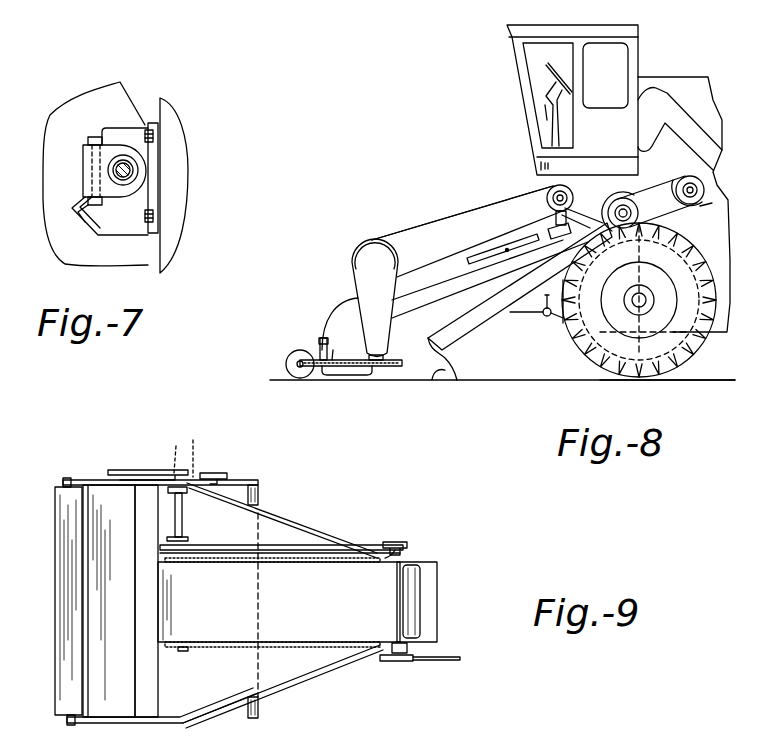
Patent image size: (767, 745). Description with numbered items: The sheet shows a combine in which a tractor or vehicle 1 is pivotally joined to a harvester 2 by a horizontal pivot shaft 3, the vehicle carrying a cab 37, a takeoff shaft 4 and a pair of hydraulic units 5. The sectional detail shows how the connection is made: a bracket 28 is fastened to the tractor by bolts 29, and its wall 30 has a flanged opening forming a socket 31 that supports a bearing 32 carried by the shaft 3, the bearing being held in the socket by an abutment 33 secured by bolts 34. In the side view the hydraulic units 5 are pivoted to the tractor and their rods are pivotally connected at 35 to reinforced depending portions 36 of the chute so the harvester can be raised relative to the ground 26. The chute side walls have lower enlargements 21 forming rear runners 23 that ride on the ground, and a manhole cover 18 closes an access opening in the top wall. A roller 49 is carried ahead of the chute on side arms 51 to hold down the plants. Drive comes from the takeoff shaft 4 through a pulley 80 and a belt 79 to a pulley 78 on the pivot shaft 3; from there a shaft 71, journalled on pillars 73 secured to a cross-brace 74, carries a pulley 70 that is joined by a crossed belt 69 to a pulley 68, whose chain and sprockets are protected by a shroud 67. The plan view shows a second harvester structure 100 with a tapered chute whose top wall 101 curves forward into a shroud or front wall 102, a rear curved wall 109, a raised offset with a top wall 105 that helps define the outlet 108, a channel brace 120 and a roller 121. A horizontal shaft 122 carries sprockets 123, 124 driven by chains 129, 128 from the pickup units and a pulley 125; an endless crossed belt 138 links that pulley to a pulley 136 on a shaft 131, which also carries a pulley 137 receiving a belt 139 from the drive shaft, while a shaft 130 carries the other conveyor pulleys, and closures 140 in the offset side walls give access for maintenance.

In FIG. 8, the tractor or vehicle 1 is at (712, 59).
In FIG. 8, the harvester 2 is at (460, 212).
In FIG. 7, the horizontal pivot shaft 3 is at (122, 162).
In FIG. 8, the horizontal pivot shaft 3 is at (636, 210).
In FIG. 8, the takeoff shaft 4 is at (703, 190).
In FIG. 8, the hydraulic units 5 is at (616, 346).
In FIG. 8, the manhole cover 18 is at (495, 253).
In FIG. 8, the enlargements 21 is at (348, 300).
In FIG. 8, the rear runners 23 is at (433, 375).
In FIG. 8, the ground 26 is at (705, 380).
In FIG. 7, the brackets 28 is at (137, 118).
In FIG. 7, the bolts 29 is at (158, 137).
In FIG. 7, the wall 30 is at (98, 228).
In FIG. 7, the socket 31 is at (85, 185).
In FIG. 7, the bearing 32 is at (140, 173).
In FIG. 7, the abutments 33 is at (85, 168).
In FIG. 7, the bolts 34 is at (95, 137).
In FIG. 8, the bolts 34 is at (636, 316).
In FIG. 8, the pivotal connection 35 is at (547, 318).
In FIG. 8, the depending portions 36 is at (508, 315).
In FIG. 8, the cab 37 is at (639, 42).
In FIG. 8, the roller 49 is at (302, 348).
In FIG. 8, the side arms 51 is at (350, 375).
In FIG. 8, the shroud 67 is at (367, 257).
In FIG. 8, the pulley 68 is at (353, 254).
In FIG. 8, the crossed belt 69 is at (422, 235).
In FIG. 8, the pulley 70 is at (543, 204).
In FIG. 8, the shaft 71 is at (552, 189).
In FIG. 8, the pillars 73 is at (578, 214).
In FIG. 8, the cross-brace 74 is at (548, 232).
In FIG. 8, the pulley 78 is at (637, 190).
In FIG. 8, the belt 79 is at (685, 209).
In FIG. 8, the pulley 80 is at (713, 203).
In FIG. 9, the harvester structure 100 is at (316, 513).
In FIG. 9, the top wall 101 is at (268, 527).
In FIG. 9, the shroud or front wall 102 is at (100, 622).
In FIG. 9, the top wall 105 is at (279, 602).
In FIG. 9, the outlet 108 is at (430, 575).
In FIG. 9, the curved wall 109 is at (260, 707).
In FIG. 9, the channel brace 120 is at (152, 687).
In FIG. 9, the roller 121 is at (62, 663).
In FIG. 9, the horizontal shaft 122 is at (183, 521).
In FIG. 9, the sprocket 123 is at (164, 451).
In FIG. 9, the sprocket 124 is at (208, 453).
In FIG. 9, the pulley 125 is at (190, 555).
In FIG. 9, the chain 128 is at (145, 468).
In FIG. 9, the chain 129 is at (213, 470).
In FIG. 9, the horizontal shaft 130 is at (183, 651).
In FIG. 9, the shaft 131 is at (413, 652).
In FIG. 9, the pulley 136 is at (400, 542).
In FIG. 9, the pulley 137 is at (385, 663).
In FIG. 9, the endless crossed belt 138 is at (320, 547).
In FIG. 9, the belt 139 is at (453, 656).
In FIG. 9, the closures 140 is at (305, 563).